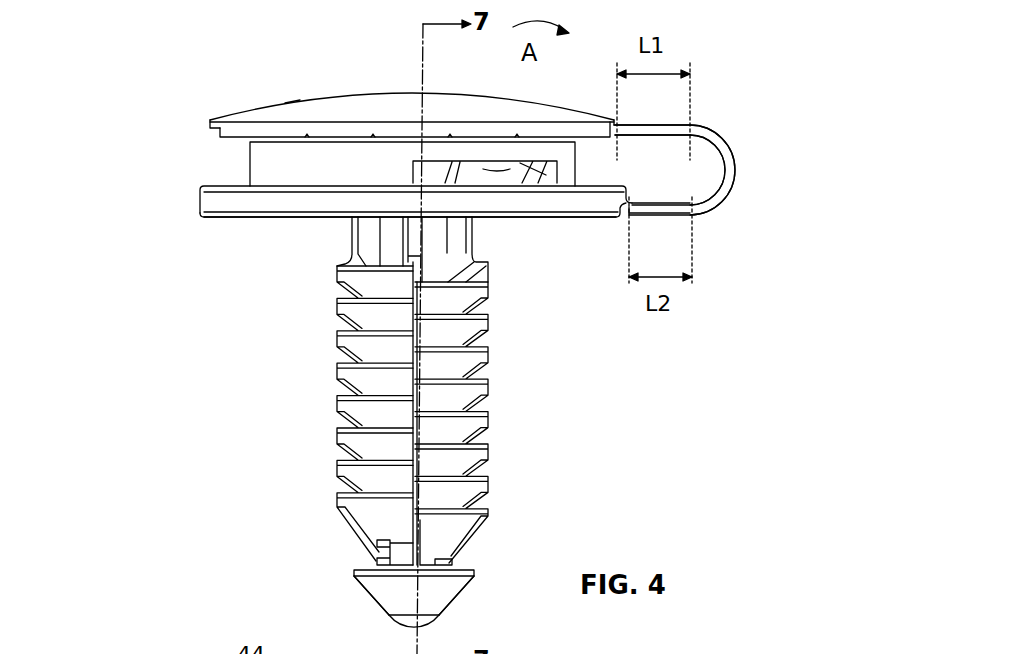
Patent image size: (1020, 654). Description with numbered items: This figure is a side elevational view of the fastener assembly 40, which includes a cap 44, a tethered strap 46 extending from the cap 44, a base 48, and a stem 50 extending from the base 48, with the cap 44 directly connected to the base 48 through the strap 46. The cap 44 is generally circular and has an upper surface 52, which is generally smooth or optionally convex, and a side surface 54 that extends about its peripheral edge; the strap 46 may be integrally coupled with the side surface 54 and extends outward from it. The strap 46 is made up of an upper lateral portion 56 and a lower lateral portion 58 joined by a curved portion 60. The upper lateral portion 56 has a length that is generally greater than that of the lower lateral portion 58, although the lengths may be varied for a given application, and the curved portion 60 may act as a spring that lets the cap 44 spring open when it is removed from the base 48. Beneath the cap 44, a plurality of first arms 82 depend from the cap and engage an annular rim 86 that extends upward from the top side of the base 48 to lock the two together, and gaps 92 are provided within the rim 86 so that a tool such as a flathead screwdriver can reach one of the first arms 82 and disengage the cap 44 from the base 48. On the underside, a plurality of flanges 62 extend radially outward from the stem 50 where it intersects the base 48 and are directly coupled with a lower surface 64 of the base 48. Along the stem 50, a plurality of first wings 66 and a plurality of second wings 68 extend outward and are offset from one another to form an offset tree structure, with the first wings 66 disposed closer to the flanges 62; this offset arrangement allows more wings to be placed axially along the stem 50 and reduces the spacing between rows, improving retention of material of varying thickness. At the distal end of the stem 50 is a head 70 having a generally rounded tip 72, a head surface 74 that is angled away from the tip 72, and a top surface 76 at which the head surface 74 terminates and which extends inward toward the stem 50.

The fastener assembly 40 is at (138, 76).
The cap 44 is at (345, 103).
The upper surface 52 is at (286, 108).
The side surface 54 is at (212, 131).
The annular rim 86 is at (250, 155).
The gaps 92 is at (537, 177).
The first arms 82 is at (536, 174).
The base 48 is at (208, 205).
The lower surface 64 is at (245, 218).
The tethered strap 46 is at (731, 164).
The upper lateral portion 56 is at (670, 129).
The curved portion 60 is at (732, 190).
The lower lateral portion 58 is at (667, 213).
The flanges 62 is at (354, 252).
The stem 50 is at (463, 395).
The first wings 66 is at (360, 505).
The second wings 68 is at (450, 523).
The top surface 76 is at (367, 563).
The head 70 is at (378, 586).
The head surface 74 is at (442, 605).
The tip 72 is at (408, 627).